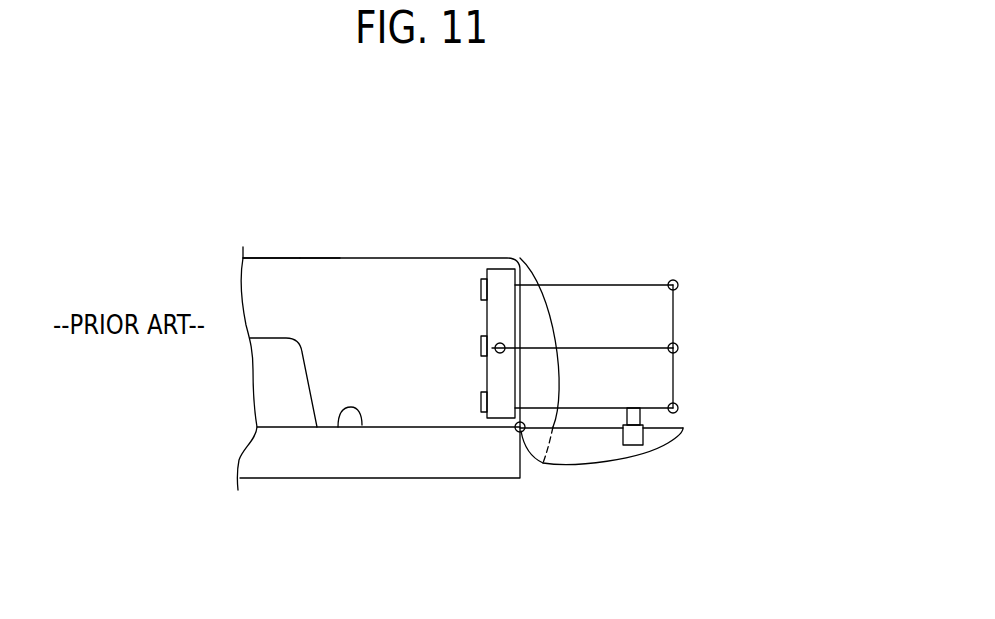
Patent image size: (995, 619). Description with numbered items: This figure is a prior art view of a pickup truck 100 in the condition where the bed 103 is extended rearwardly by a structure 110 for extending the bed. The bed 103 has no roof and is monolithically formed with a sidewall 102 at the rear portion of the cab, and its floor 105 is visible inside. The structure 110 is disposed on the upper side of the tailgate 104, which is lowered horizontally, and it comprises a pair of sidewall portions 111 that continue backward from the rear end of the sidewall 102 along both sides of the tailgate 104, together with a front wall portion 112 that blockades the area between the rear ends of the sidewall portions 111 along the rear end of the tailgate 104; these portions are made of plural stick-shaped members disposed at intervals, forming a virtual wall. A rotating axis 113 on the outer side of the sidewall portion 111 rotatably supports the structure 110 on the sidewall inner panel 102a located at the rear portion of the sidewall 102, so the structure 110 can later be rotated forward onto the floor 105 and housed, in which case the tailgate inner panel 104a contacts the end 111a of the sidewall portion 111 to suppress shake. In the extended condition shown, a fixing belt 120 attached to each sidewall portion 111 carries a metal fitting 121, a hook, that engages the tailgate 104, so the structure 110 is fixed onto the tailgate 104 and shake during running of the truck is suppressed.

The pickup truck 100 is at (404, 226).
The sidewall 102 is at (282, 257).
The bed 103 is at (312, 249).
The floor 105 is at (362, 425).
The sidewall inner panel 102a is at (487, 358).
The end of sidewall portion 111a is at (481, 290).
The rotating axis 113 is at (500, 343).
The sidewall portion 111 is at (602, 338).
The structure for extending a bed 110 is at (684, 306).
The front wall portion 112 is at (684, 362).
The tailgate inner panel 104a is at (657, 425).
The tailgate 104 is at (567, 467).
The metal fitting 121 is at (633, 446).
The fixing belt 120 is at (645, 420).